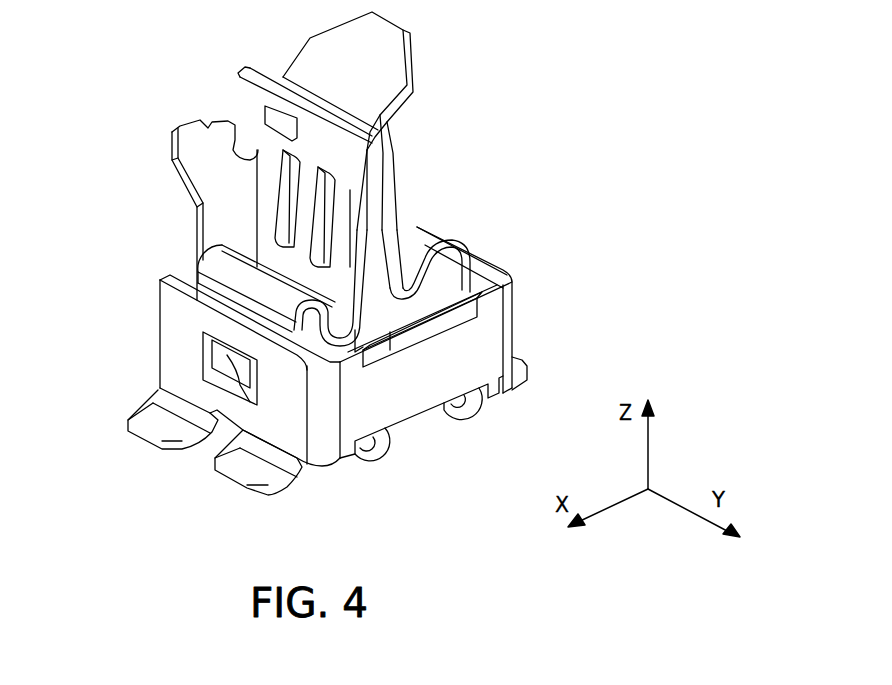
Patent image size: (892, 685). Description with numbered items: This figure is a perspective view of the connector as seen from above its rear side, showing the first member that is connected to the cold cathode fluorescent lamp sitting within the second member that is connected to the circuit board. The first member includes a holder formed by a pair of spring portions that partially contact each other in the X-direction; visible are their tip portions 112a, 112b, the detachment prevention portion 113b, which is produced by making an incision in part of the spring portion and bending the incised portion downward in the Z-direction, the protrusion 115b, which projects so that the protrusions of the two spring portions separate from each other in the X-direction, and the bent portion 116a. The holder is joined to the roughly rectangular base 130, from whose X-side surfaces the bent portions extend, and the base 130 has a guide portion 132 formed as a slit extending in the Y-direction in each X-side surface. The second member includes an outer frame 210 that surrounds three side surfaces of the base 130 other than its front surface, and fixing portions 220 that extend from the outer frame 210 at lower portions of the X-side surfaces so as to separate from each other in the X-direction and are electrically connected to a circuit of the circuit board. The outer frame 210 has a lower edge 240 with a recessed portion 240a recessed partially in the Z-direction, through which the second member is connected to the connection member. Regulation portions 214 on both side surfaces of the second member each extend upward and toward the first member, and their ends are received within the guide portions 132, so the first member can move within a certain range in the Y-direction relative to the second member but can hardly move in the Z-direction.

The tip portion 112a is at (395, 57).
The tip portion 112b is at (254, 77).
The detachment prevention portion 113b is at (273, 112).
The protrusion 115b is at (322, 227).
The bent portion 116a is at (415, 228).
The base 130 is at (437, 310).
The guide portion 132 is at (222, 368).
The outer frame 210 is at (395, 410).
The regulation portion 214 is at (226, 374).
The fixing portion 220 is at (142, 420).
The lower edge 240 is at (333, 470).
The recessed portion 240a is at (428, 417).